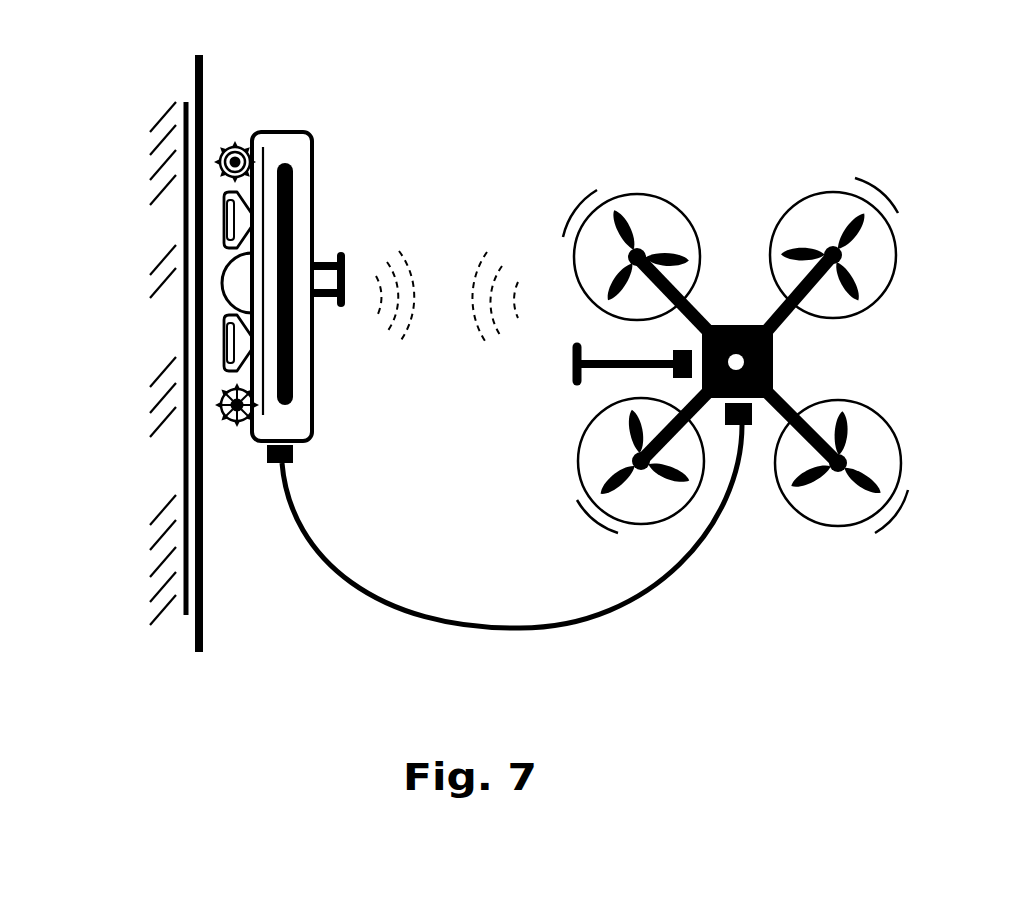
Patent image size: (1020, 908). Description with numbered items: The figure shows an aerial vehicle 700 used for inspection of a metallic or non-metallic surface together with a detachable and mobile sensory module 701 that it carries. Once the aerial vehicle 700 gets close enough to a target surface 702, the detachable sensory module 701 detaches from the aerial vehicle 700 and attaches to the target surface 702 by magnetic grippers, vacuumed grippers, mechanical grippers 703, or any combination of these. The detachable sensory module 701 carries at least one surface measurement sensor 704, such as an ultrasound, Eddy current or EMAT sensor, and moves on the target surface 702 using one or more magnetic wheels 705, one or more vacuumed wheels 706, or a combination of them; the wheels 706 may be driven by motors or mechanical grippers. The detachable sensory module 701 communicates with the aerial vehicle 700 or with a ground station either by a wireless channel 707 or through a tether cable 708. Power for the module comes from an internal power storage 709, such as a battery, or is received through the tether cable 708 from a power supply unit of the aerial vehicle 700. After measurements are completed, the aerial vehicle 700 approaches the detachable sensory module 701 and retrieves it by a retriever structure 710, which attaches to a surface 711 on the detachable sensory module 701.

The aerial vehicle 700 is at (735, 268).
The detachable sensory module 701 is at (322, 208).
The target surface 702 is at (217, 565).
The mechanical grippers 703 is at (217, 233).
The surface measurement sensor 704 is at (212, 305).
The magnetic wheels 705 is at (223, 437).
The vacuumed wheels 706 is at (237, 123).
The wireless channel 707 is at (445, 250).
The tether cable 708 is at (687, 568).
The internal power storage 709 is at (312, 408).
The retriever structure 710 is at (557, 372).
The surface 711 is at (330, 318).